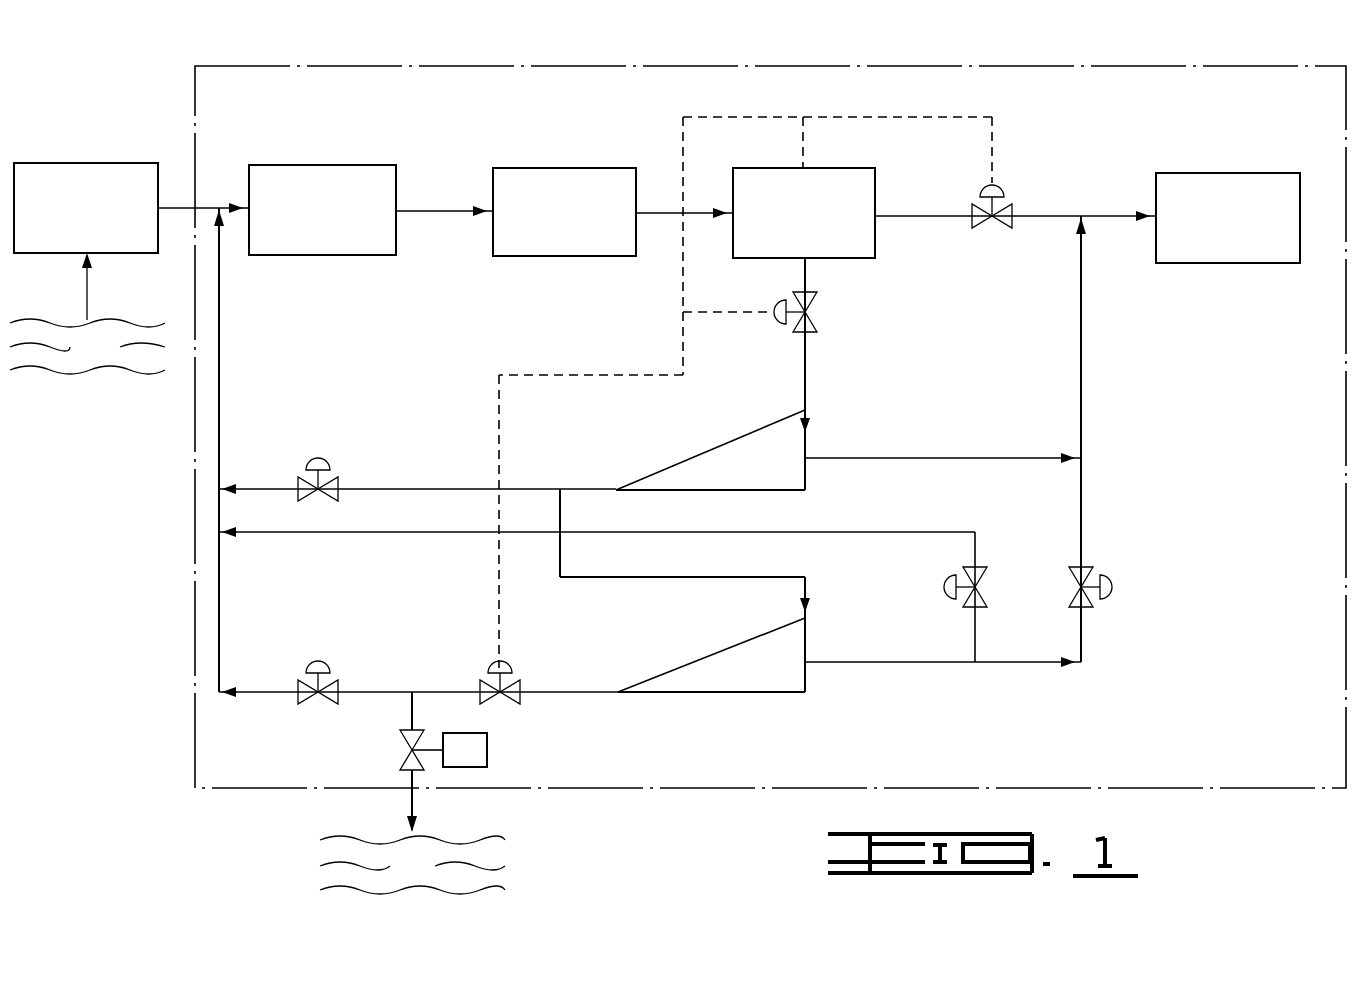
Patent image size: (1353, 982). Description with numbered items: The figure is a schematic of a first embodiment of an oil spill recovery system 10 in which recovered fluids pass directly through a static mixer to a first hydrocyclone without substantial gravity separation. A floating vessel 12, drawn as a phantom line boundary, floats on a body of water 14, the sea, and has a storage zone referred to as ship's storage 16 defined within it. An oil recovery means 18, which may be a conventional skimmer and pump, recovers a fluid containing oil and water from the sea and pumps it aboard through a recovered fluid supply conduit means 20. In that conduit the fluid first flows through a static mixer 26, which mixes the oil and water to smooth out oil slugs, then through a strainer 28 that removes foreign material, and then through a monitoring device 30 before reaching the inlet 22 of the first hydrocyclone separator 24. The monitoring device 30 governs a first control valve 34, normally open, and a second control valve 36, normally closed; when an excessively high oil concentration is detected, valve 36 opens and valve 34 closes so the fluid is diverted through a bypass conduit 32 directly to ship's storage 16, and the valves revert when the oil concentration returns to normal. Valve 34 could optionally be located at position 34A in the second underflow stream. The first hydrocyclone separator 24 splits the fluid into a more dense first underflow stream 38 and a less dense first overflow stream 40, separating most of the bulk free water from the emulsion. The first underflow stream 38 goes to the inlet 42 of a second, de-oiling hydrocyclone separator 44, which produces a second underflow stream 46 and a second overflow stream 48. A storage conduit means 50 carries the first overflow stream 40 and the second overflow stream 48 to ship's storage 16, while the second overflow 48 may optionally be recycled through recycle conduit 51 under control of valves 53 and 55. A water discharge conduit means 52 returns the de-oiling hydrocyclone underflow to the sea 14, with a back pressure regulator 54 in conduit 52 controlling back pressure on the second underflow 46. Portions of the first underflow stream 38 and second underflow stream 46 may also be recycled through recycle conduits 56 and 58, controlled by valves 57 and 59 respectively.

The oil spill recovery system 10 is at (125, 707).
The floating vessel 12 is at (790, 66).
The body of water 14 is at (100, 361).
The ship's storage 16 is at (1225, 173).
The oil recovery means 18 is at (70, 163).
The recovered fluid supply conduit means 20 is at (175, 208).
The inlet 22 is at (805, 410).
The first hydrocyclone separator 24 is at (768, 437).
The static mixer 26 is at (332, 255).
The strainer 28 is at (568, 256).
The monitoring device 30 is at (852, 258).
The bypass conduit 32 is at (910, 216).
The first control valve 34 is at (818, 312).
The alternative valve position 34A is at (520, 685).
The second control valve 36 is at (1000, 226).
The first underflow stream 38 is at (585, 489).
The first overflow stream 40 is at (925, 458).
The inlet 42 is at (807, 617).
The second hydrocyclone separator 44 is at (750, 652).
The second underflow stream 46 is at (568, 693).
The second overflow stream 48 is at (862, 662).
The storage conduit means 50 is at (1083, 342).
The recycle conduit 51 is at (845, 532).
The water discharge conduit means 52 is at (408, 706).
The valve 53 is at (985, 575).
The back pressure regulator 54 is at (400, 755).
The valve 55 is at (1070, 598).
The recycle conduit 56 is at (432, 489).
The valve 57 is at (300, 480).
The recycle conduit 58 is at (372, 692).
The valve 59 is at (300, 685).